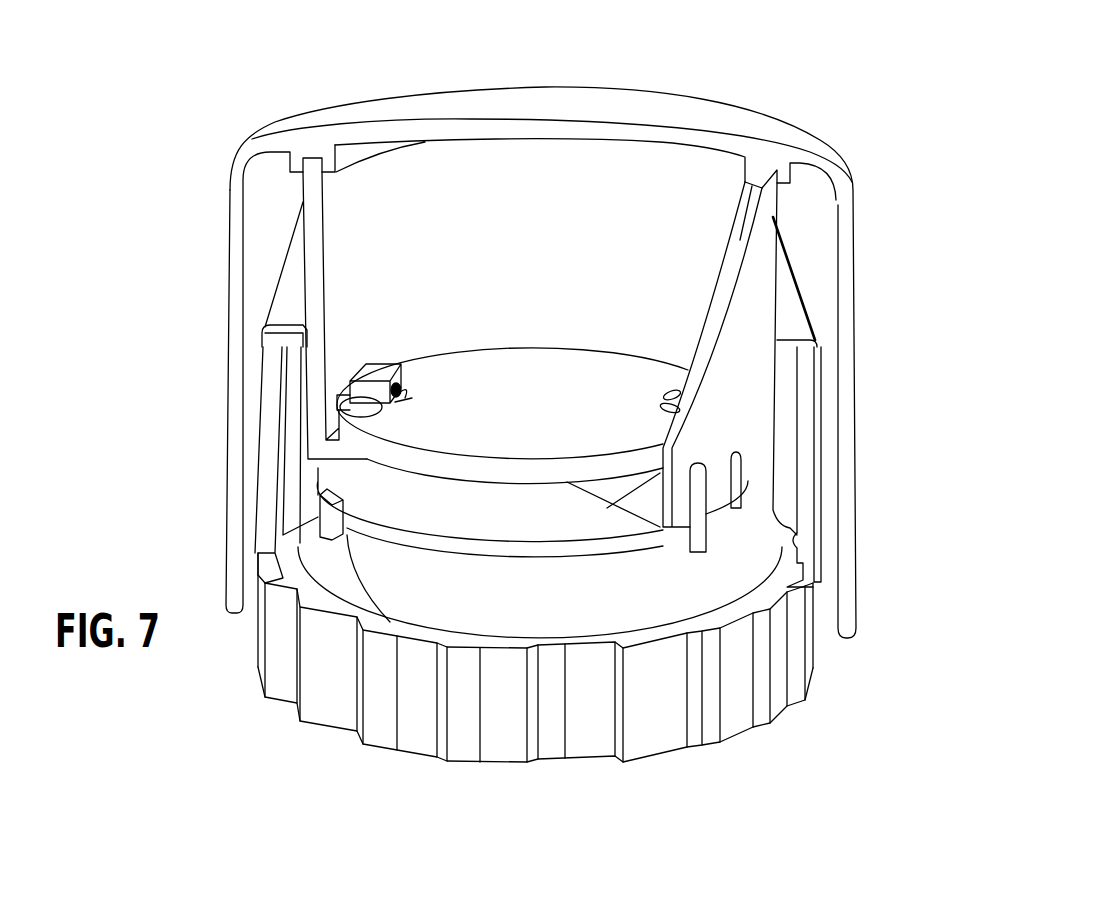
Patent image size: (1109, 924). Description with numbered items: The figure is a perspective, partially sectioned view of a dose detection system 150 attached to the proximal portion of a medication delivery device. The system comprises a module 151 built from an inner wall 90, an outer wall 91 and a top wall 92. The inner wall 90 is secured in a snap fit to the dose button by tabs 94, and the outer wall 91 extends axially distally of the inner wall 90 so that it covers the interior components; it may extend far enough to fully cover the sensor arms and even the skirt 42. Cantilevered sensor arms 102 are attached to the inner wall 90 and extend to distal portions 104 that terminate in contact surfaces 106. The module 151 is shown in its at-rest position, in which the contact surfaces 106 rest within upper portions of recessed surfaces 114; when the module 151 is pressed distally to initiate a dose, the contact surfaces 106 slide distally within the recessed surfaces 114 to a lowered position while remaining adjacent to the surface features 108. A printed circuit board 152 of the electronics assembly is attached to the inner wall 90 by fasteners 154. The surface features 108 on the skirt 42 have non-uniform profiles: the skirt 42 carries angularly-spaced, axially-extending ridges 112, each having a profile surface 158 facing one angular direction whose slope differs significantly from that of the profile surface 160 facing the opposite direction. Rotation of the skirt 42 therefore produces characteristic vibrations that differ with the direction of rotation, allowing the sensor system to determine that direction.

The dose detection system 150 is at (265, 88).
The top wall 92 is at (452, 105).
The module 151 is at (689, 108).
The inner wall 90 is at (317, 252).
The outer wall 91 is at (240, 313).
The cantilevered sensor arms 102 is at (268, 412).
The distal portions 104 is at (820, 510).
The contact surfaces 106 is at (800, 547).
The tabs 94 is at (717, 530).
The printed circuit board 152 is at (540, 377).
The fasteners 154 is at (363, 403).
The surface features 108 is at (352, 760).
The skirt 42 is at (510, 713).
The ridges 112 is at (318, 713).
The profile surface 158 is at (693, 712).
The profile surface 160 is at (716, 735).
The recessed surfaces 114 is at (780, 693).